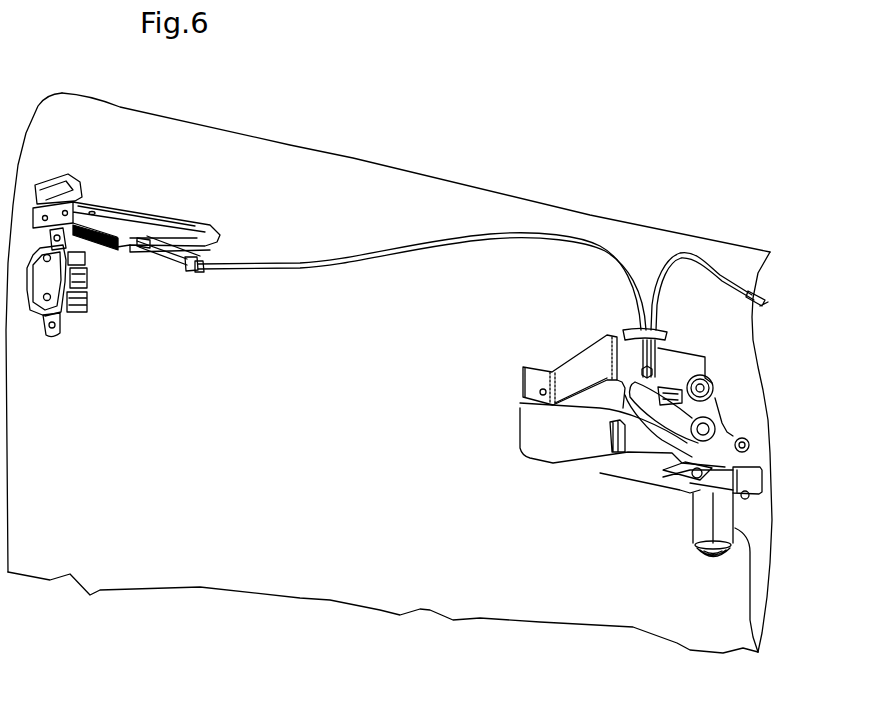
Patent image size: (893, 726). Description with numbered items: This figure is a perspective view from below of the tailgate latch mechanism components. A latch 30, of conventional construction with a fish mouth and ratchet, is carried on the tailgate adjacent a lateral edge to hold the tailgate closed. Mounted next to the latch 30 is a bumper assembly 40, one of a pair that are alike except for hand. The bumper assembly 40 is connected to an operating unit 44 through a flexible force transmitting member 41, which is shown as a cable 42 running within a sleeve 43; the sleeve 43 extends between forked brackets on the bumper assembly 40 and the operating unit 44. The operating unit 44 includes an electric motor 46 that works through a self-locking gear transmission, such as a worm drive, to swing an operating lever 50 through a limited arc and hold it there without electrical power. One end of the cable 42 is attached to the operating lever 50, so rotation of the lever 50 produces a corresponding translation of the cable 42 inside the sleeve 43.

The latch 30 is at (78, 317).
The bumper assembly 40 is at (130, 200).
The flexible force transmitting member 41 is at (378, 248).
The cable 42 is at (167, 260).
The sleeve 43 is at (283, 272).
The operating unit 44 is at (638, 478).
The electric motor 46 is at (200, 252).
The operating lever 50 is at (520, 403).